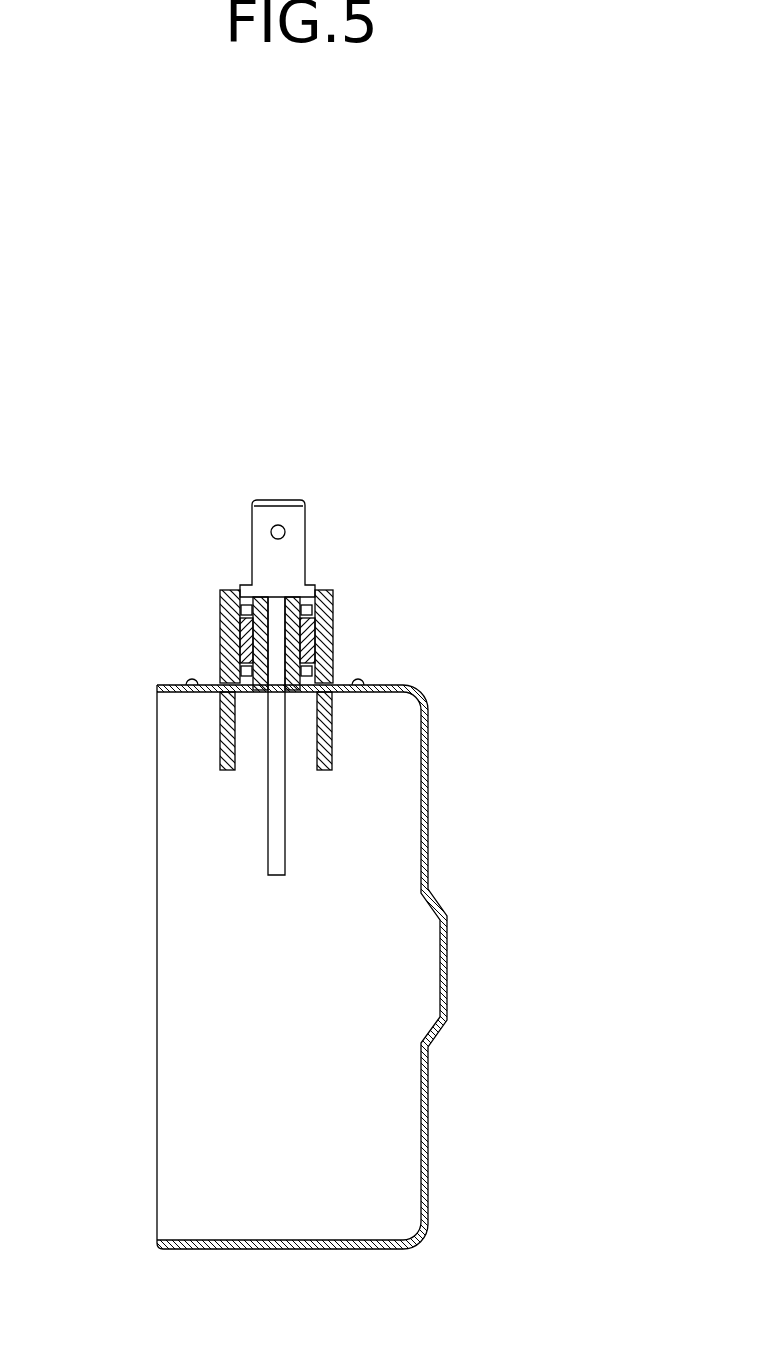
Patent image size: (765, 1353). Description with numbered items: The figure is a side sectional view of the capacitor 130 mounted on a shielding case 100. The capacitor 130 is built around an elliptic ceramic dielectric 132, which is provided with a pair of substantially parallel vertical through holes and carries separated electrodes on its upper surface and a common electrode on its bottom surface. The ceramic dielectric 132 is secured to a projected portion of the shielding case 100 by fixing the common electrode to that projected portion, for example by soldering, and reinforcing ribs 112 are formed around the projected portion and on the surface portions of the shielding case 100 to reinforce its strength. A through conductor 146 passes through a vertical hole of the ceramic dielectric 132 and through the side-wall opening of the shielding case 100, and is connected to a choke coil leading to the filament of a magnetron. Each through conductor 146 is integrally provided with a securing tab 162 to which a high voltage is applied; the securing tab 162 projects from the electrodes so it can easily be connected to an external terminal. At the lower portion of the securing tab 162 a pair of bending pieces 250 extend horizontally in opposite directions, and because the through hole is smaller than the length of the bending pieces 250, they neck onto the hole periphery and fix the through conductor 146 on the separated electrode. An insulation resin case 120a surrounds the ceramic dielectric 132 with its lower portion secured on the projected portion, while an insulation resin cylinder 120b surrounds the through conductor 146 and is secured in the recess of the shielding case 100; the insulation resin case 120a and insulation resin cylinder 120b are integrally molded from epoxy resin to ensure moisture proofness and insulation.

The shielding case 100 is at (436, 890).
The reinforcing ribs 112 is at (360, 680).
The insulation resin case 120a is at (334, 606).
The insulation resin cylinder 120b is at (222, 748).
The capacitor 130 is at (508, 600).
The ceramic dielectric 132 is at (237, 647).
The through conductor 146 is at (291, 840).
The securing tab 162 is at (297, 525).
The bending pieces 250 is at (220, 602).